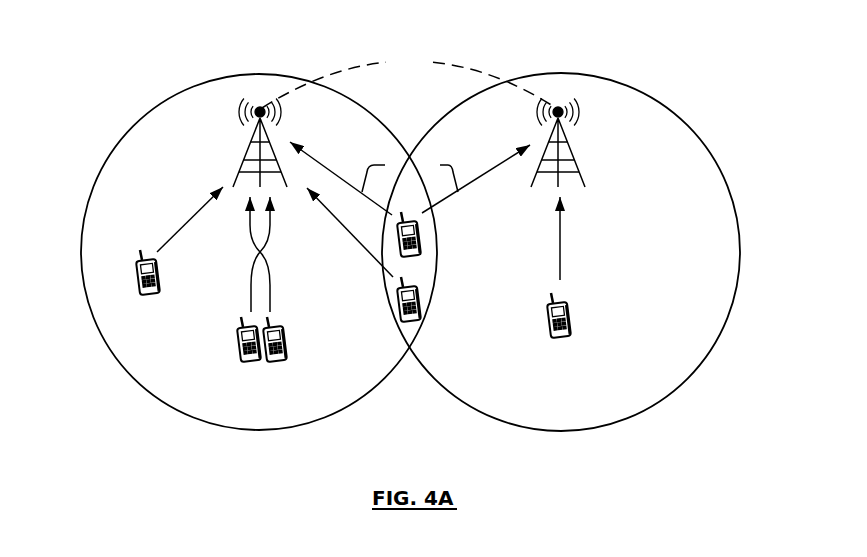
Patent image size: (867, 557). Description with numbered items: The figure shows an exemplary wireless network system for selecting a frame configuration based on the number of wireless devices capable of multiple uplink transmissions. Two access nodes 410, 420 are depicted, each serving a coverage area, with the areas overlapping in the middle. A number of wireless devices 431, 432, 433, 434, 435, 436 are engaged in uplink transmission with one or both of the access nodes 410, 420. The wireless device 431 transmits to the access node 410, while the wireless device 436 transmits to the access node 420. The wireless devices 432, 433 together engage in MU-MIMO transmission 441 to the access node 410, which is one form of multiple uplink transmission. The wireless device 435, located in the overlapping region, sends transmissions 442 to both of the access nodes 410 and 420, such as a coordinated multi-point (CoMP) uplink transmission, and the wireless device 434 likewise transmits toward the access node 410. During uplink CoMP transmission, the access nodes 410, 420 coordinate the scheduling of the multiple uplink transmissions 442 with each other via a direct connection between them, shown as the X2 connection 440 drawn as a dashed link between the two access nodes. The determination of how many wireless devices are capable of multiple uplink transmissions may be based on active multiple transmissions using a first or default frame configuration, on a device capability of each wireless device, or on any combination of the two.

The access node 410 is at (245, 168).
The access node 420 is at (577, 170).
The wireless device 431 is at (137, 295).
The wireless device 432 is at (247, 362).
The wireless device 433 is at (273, 360).
The wireless device 434 is at (405, 318).
The wireless device 435 is at (408, 254).
The wireless device 436 is at (558, 338).
The X2 connection 440 is at (396, 38).
The MU-MIMO transmission 441 is at (270, 297).
The transmissions 442 is at (410, 178).